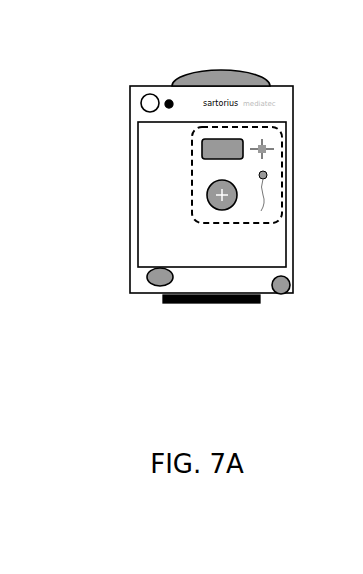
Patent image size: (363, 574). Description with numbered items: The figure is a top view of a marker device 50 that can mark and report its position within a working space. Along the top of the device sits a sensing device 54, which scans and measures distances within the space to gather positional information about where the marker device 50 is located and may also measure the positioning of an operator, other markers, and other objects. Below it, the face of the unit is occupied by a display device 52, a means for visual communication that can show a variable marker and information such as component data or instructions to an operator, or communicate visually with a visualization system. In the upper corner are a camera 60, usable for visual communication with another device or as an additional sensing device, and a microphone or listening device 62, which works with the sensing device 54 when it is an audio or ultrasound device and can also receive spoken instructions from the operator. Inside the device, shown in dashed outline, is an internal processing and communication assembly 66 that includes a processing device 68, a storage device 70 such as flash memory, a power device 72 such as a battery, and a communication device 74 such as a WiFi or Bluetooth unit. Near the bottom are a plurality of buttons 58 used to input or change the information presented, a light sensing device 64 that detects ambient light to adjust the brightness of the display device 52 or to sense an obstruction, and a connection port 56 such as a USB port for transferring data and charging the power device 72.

The marker device 50 is at (129, 188).
The display device 52 is at (268, 252).
The sensing device 54 is at (216, 69).
The connection port 56 is at (215, 305).
The buttons 58 is at (148, 289).
The camera 60 is at (143, 93).
The microphone or listening device 62 is at (168, 96).
The light sensing device 64 is at (292, 291).
The internal processing and communication assembly 66 is at (287, 178).
The processing device 68 is at (280, 138).
The storage device 70 is at (206, 148).
The power device 72 is at (210, 195).
The communication device 74 is at (273, 208).